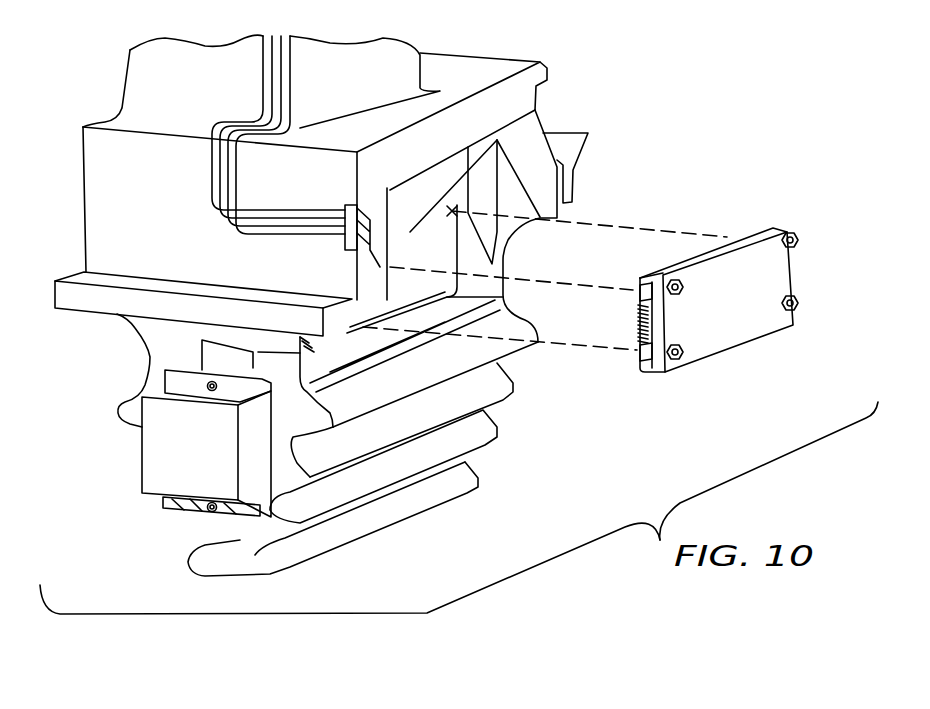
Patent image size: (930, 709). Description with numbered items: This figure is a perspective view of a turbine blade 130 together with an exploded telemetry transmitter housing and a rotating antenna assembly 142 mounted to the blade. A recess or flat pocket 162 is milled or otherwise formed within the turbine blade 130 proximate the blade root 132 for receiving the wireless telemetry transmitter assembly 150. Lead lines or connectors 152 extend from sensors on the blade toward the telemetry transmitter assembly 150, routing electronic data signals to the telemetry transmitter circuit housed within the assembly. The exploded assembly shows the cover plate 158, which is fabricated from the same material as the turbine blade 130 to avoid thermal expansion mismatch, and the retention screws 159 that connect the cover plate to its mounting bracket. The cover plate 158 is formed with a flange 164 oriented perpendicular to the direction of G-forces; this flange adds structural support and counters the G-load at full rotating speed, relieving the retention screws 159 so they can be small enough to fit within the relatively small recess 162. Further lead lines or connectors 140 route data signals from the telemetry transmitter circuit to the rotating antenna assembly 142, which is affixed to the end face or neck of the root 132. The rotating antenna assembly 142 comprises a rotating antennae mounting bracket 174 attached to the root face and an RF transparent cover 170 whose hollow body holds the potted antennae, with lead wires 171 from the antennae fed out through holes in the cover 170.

The turbine blade 130 is at (386, 70).
The blade root 132 is at (381, 527).
The lead lines or connectors 140 is at (253, 367).
The rotating antenna assembly 142 is at (257, 460).
The telemetry transmitter assembly 150 is at (810, 352).
The lead lines or connectors 152 is at (293, 228).
The cover plate 158 is at (769, 295).
The retention screws 159 is at (677, 360).
The recess or flat pocket 162 is at (497, 140).
The flange 164 is at (652, 322).
The RF transparent cover 170 is at (172, 463).
The lead wires 171 is at (192, 505).
The rotating antennae mounting bracket 174 is at (172, 385).